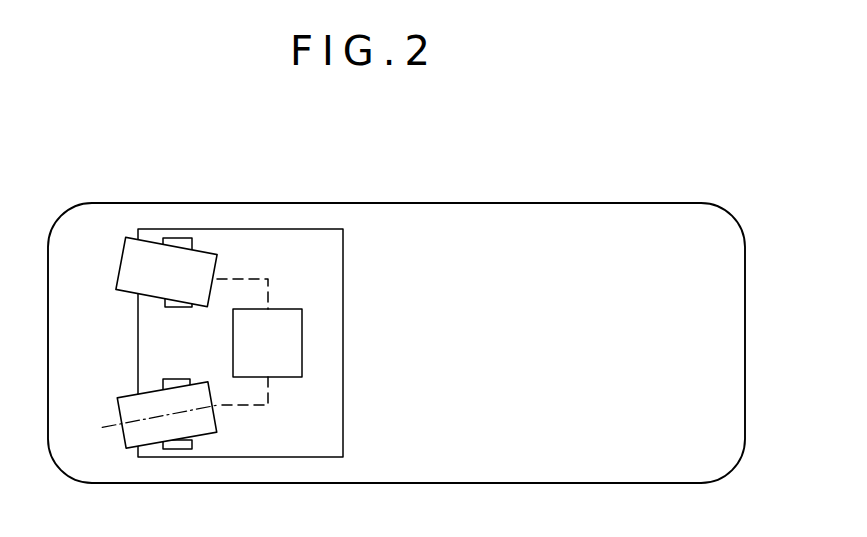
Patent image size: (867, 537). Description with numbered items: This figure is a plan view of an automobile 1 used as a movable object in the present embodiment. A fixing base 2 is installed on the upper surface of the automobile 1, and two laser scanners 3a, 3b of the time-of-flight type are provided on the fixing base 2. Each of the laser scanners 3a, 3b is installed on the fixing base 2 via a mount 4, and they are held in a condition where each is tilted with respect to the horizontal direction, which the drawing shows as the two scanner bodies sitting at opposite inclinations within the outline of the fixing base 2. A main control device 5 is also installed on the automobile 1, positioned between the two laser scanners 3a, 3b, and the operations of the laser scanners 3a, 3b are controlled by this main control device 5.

The automobile 1 is at (507, 202).
The fixing base 2 is at (305, 230).
The laser scanner 3a is at (202, 252).
The laser scanner 3b is at (207, 435).
The mount 4 is at (181, 306).
The main control device 5 is at (302, 325).